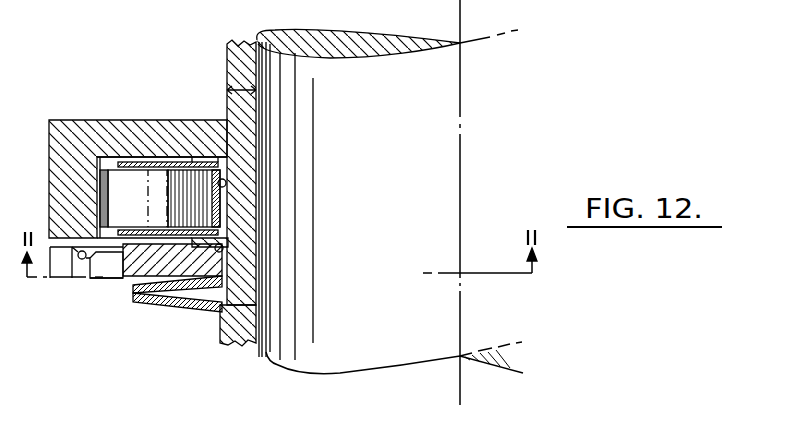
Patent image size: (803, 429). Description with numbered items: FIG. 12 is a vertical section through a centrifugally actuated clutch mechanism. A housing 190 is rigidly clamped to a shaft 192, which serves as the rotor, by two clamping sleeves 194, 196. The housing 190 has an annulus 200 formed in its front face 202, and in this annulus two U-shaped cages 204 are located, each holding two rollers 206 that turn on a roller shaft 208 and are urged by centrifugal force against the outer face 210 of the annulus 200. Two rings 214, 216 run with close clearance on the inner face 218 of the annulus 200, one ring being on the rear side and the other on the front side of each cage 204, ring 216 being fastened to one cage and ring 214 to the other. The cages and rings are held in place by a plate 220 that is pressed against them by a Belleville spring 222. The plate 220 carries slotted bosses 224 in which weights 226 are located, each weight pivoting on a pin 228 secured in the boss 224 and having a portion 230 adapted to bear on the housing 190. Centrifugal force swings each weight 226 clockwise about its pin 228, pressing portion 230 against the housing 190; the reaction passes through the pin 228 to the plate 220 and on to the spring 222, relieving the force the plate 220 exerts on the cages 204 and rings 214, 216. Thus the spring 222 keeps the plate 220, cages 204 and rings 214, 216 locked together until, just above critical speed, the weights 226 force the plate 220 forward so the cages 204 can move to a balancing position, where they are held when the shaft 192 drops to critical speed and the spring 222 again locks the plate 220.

The housing 190 is at (167, 119).
The shaft 192 is at (382, 135).
The clamping sleeve 194 is at (221, 333).
The clamping sleeve 196 is at (228, 48).
The annulus 200 is at (106, 162).
The front face 202 is at (53, 250).
The U-shaped cage 204 is at (128, 172).
The roller 206 is at (145, 222).
The roller shaft 208 is at (186, 158).
The outer face of annulus 210 is at (137, 198).
The ring 214 is at (203, 158).
The ring 216 is at (223, 247).
The inner face of annulus 218 is at (224, 180).
The plate 220 is at (200, 277).
The Belleville spring 222 is at (165, 300).
The slotted boss 224 is at (77, 287).
The weight 226 is at (108, 265).
The pin 228 is at (80, 262).
The bearing portion of weight 230 is at (84, 250).